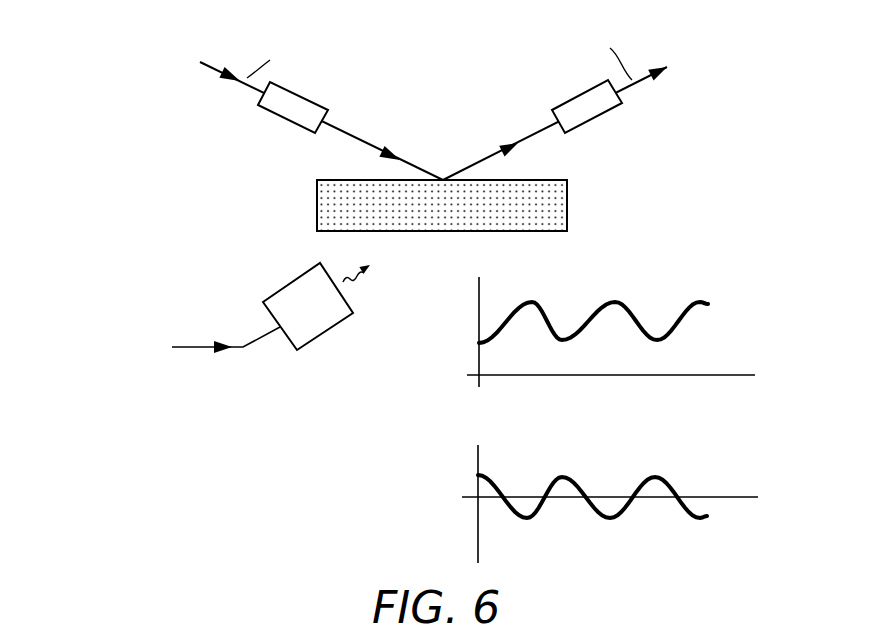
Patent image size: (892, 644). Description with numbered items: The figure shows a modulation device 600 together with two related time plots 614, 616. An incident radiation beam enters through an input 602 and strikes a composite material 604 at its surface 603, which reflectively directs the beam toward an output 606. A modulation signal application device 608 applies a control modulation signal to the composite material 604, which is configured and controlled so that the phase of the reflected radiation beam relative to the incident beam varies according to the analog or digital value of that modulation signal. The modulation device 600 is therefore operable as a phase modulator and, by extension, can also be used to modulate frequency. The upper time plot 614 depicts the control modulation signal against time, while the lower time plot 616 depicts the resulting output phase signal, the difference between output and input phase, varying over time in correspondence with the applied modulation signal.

The modulation device 600 is at (430, 68).
The input 602 is at (302, 95).
The surface 603 is at (542, 180).
The composite material 604 is at (567, 202).
The output 606 is at (563, 102).
The modulation signal application device 608 is at (288, 283).
The time plot of modulation signal 614 is at (628, 305).
The time plot of output phase signal 616 is at (672, 480).